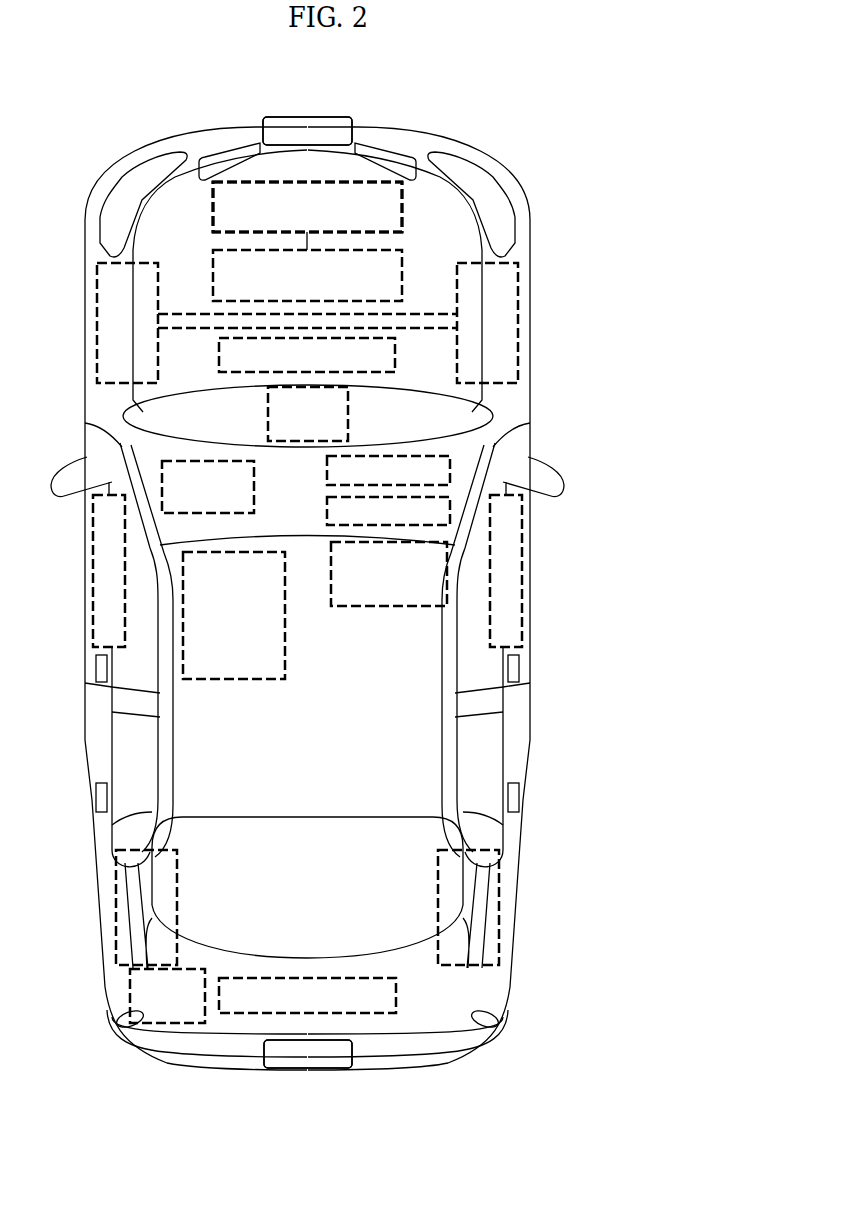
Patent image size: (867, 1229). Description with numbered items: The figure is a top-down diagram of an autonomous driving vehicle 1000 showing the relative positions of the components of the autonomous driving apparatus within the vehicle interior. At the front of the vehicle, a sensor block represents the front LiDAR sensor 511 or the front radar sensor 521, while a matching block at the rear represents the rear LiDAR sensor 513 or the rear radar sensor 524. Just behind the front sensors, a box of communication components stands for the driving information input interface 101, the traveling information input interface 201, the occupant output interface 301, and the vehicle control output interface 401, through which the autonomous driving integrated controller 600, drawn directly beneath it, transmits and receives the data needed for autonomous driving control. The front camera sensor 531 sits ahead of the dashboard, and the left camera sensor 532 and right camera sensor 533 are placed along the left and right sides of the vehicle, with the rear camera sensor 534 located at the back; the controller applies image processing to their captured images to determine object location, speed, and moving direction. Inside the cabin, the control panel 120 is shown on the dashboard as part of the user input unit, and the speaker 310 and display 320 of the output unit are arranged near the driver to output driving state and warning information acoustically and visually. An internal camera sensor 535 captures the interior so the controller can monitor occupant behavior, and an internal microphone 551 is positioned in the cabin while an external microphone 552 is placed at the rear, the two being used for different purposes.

The autonomous driving vehicle 1000 is at (157, 76).
The front LiDAR sensor 511 is at (310, 117).
The front radar sensor 521 is at (307, 131).
The driving information input interface 101 is at (403, 211).
The traveling information input interface 201 is at (307, 207).
The occupant output interface 301 is at (307, 207).
The vehicle control output interface 401 is at (307, 207).
The autonomous driving integrated controller 600 is at (402, 275).
The front camera sensor 531 is at (395, 348).
The control panel 120 is at (348, 410).
The internal camera sensor 535 is at (162, 483).
The speaker 310 is at (327, 468).
The display 320 is at (327, 512).
The internal microphone 551 is at (387, 606).
The left camera sensor 532 is at (93, 560).
The right camera sensor 533 is at (522, 560).
The external microphone 552 is at (130, 997).
The rear camera sensor 534 is at (396, 996).
The rear LiDAR sensor 513 is at (320, 1070).
The rear radar sensor 524 is at (308, 1054).